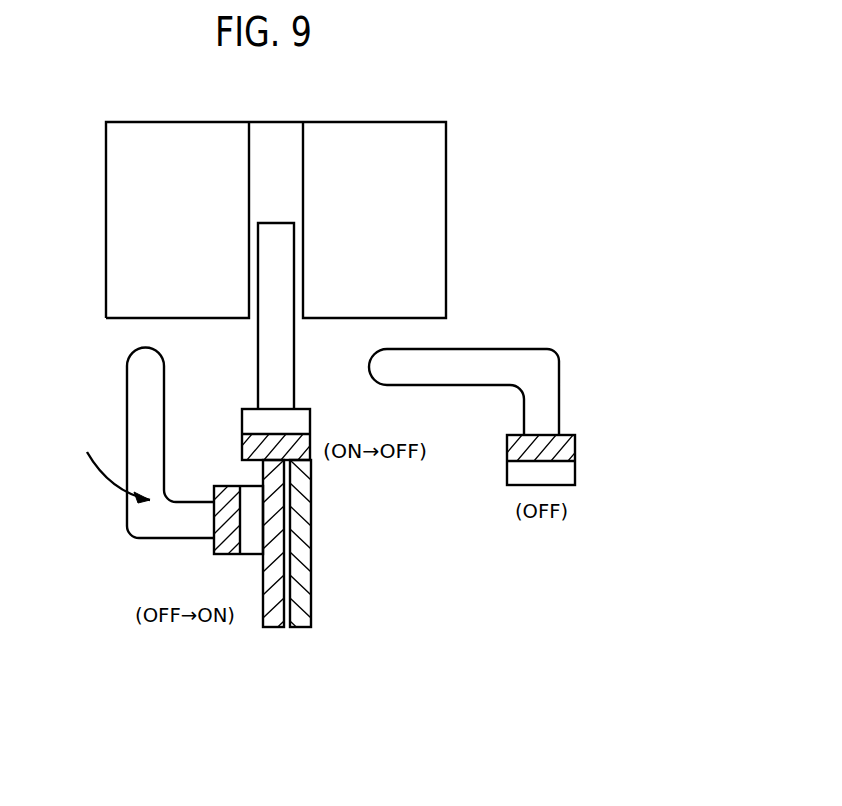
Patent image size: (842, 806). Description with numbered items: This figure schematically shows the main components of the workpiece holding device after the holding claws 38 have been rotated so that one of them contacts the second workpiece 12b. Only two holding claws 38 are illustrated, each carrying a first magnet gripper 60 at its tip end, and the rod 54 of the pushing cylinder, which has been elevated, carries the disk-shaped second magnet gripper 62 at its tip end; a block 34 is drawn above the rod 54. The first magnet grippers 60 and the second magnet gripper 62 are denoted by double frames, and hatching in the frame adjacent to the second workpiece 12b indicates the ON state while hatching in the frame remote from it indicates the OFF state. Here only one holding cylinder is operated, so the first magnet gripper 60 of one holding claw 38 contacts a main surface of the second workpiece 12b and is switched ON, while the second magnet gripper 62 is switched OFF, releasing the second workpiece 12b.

The housing block 34 is at (422, 186).
The rod 54 is at (283, 262).
The second magnet gripper 62 is at (300, 423).
The second workpiece 12b is at (300, 551).
The first magnet gripper 60 is at (222, 556).
The holding claw 38 is at (148, 388).